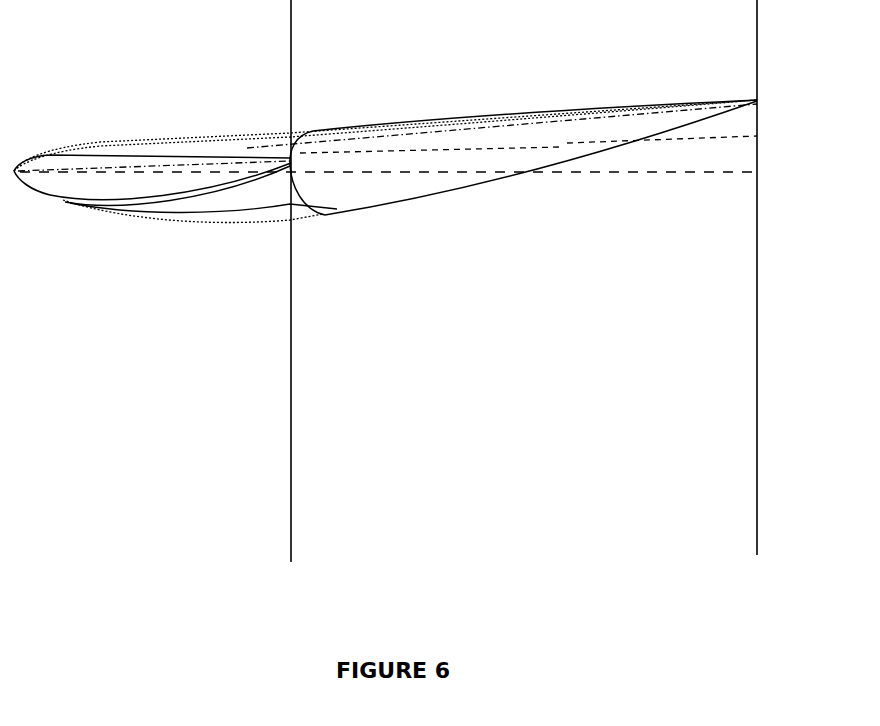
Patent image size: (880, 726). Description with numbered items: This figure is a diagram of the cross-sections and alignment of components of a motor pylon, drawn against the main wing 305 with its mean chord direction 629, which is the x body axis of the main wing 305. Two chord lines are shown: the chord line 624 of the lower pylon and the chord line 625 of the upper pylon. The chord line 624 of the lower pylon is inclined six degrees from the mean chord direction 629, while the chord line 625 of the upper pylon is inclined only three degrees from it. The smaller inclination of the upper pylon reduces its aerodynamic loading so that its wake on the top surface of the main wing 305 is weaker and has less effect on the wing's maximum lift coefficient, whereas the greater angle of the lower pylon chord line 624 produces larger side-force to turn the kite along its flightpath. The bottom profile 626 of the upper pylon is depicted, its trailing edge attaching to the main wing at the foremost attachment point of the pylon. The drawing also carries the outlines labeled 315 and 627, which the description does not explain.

The baseline blade tip airfoil outline 315 is at (267, 150).
The chord line of the lower pylon 624 is at (388, 137).
The chord line of the upper pylon 625 is at (570, 147).
The bottom profile of the upper pylon 626 is at (157, 202).
The lower surface line of blended tip airfoil 627 is at (265, 175).
The mean chord direction 629 is at (642, 174).
The main wing 305 is at (395, 413).